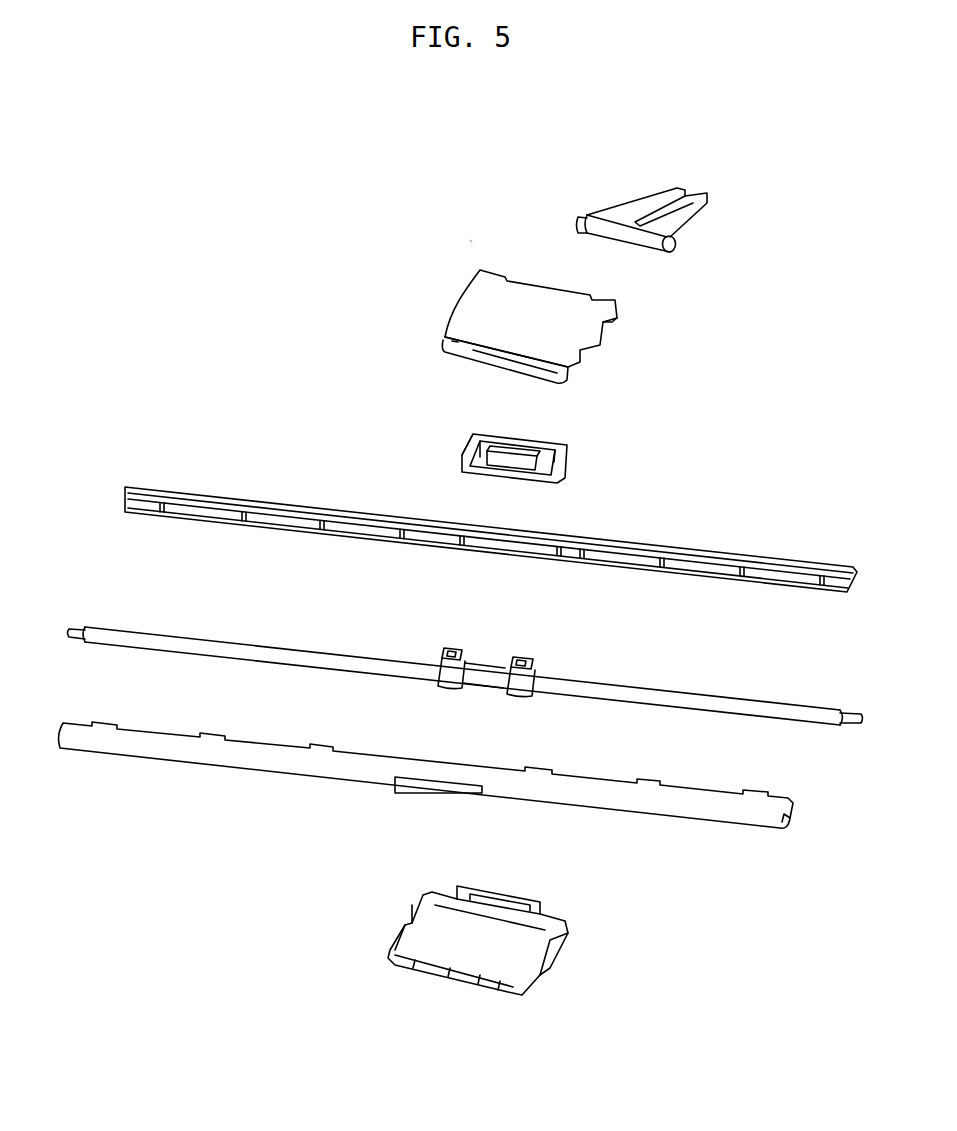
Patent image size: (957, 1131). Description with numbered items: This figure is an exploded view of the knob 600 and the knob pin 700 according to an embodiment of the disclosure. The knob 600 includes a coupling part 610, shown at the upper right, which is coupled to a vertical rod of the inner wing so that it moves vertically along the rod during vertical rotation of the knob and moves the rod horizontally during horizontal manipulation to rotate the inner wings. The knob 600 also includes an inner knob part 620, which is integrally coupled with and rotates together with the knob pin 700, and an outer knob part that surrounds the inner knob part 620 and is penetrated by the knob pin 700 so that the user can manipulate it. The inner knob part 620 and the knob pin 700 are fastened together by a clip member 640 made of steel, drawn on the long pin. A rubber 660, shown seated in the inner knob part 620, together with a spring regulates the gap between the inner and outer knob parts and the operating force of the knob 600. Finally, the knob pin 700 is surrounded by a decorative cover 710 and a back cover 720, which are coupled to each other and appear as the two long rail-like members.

The knob 600 is at (477, 263).
The coupling part 610 is at (638, 208).
The inner knob part 620 is at (567, 458).
The clip member 640 is at (525, 658).
The rubber 660 is at (473, 443).
The knob pin 700 is at (325, 658).
The decorative cover 710 is at (700, 808).
The back cover 720 is at (775, 562).